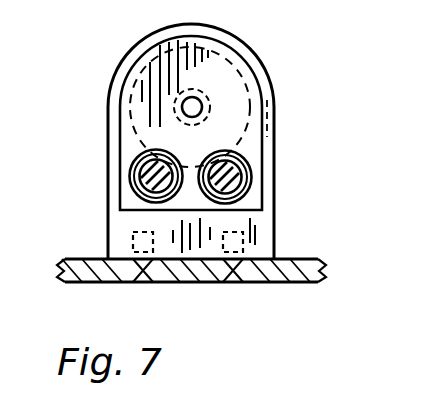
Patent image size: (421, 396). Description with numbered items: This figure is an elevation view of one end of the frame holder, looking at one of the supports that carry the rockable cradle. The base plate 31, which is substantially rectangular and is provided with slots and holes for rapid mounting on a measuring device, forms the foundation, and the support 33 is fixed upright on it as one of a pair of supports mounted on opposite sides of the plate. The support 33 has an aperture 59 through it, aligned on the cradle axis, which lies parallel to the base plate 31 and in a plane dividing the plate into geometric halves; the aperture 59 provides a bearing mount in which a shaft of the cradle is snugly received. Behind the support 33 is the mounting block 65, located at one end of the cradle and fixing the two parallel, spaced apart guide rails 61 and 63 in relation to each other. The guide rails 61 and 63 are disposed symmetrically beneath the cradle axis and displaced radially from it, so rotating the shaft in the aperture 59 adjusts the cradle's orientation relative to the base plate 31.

The base plate 31 is at (197, 272).
The support 33 is at (250, 229).
The aperture 59 is at (193, 97).
The guide rail 61 is at (245, 180).
The guide rail 63 is at (165, 179).
The mounting block 65 is at (250, 146).